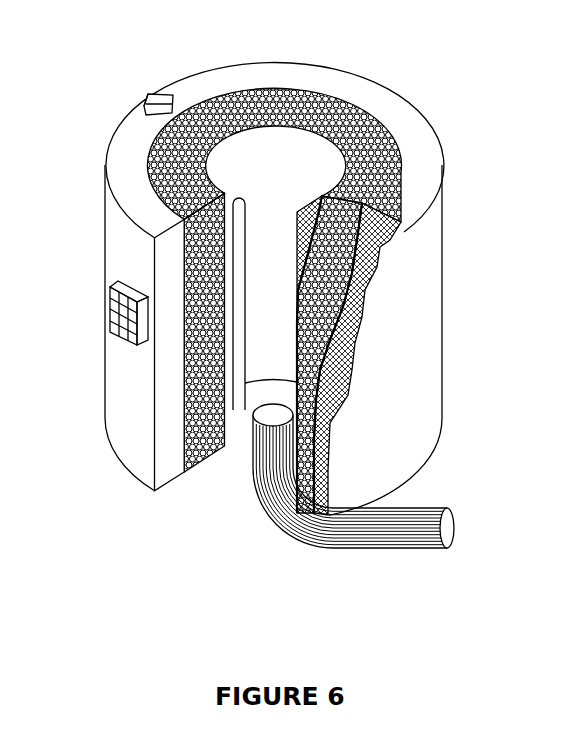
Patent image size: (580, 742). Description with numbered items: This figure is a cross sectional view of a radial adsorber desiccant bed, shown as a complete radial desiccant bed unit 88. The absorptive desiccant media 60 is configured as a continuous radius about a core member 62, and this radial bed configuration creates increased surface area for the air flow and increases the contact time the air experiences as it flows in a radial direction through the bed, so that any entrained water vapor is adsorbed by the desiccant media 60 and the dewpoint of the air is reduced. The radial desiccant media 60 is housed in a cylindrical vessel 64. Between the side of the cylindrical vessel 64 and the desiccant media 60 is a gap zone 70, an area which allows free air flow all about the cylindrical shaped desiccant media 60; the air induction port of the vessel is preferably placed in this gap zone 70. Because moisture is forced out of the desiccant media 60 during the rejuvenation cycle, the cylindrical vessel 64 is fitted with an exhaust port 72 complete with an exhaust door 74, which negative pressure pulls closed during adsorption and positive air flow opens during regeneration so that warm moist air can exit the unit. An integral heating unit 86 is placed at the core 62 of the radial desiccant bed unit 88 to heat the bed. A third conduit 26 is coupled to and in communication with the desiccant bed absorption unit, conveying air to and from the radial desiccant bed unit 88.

The third conduit 26 is at (452, 515).
The desiccant media 60 is at (195, 468).
The core member 62 is at (251, 413).
The cylindrical vessel 64 is at (442, 248).
The gap zone 70 is at (158, 489).
The exhaust port 72 is at (145, 107).
The exhaust door 74 is at (163, 93).
The integral heating unit 86 is at (243, 413).
The radial desiccant bed unit 88 is at (107, 458).